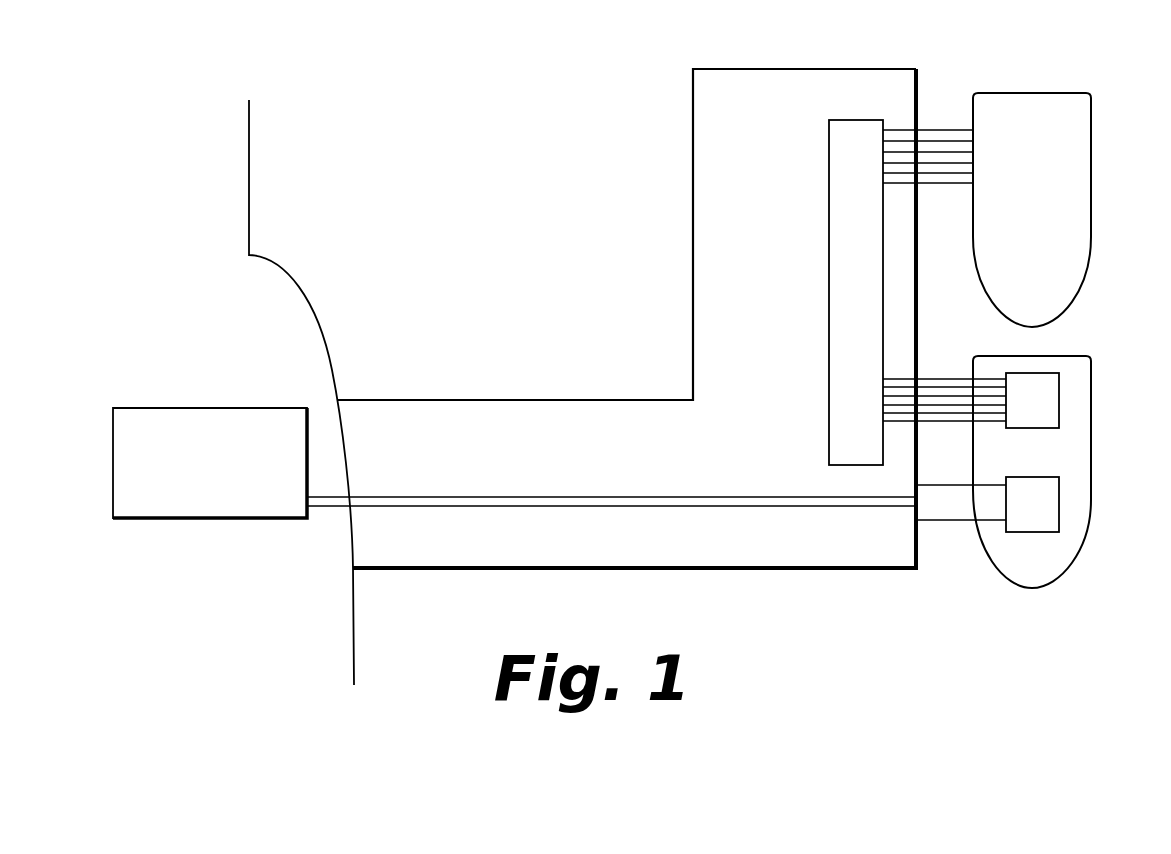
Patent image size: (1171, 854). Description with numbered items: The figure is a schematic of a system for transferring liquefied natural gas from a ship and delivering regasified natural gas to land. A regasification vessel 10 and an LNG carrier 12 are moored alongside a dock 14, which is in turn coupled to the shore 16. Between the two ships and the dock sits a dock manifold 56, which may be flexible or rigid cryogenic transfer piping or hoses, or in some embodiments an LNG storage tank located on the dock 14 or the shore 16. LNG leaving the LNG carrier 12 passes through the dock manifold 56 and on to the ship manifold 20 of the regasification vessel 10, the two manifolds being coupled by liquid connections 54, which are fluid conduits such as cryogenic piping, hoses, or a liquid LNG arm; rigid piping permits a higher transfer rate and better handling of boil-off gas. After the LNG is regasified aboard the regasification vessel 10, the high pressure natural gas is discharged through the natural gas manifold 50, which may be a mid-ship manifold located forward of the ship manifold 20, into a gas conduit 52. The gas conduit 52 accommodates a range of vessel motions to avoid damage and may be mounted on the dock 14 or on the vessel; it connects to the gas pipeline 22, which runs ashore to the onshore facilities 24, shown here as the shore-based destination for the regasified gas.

The regasification vessel 10 is at (1091, 398).
The LNG carrier 12 is at (1032, 210).
The dock 14 is at (693, 140).
The shore 16 is at (326, 345).
The ship manifold 20 is at (1032, 400).
The gas pipeline 22 is at (685, 497).
The onshore facilities 24 is at (210, 463).
The natural gas manifold 50 is at (1032, 504).
The gas conduit 52 is at (935, 522).
The liquid connections 54 is at (935, 128).
The dock manifold 56 is at (856, 292).